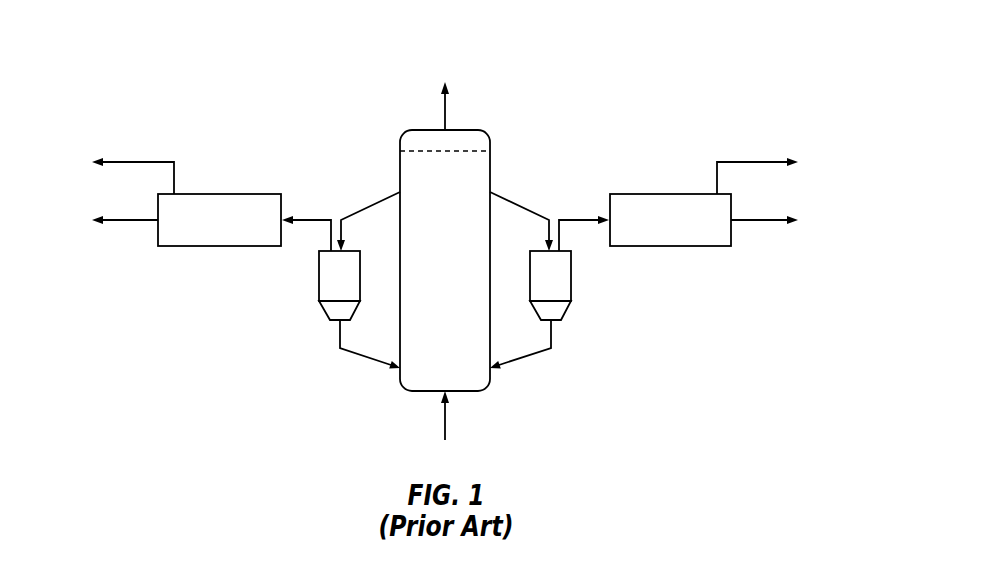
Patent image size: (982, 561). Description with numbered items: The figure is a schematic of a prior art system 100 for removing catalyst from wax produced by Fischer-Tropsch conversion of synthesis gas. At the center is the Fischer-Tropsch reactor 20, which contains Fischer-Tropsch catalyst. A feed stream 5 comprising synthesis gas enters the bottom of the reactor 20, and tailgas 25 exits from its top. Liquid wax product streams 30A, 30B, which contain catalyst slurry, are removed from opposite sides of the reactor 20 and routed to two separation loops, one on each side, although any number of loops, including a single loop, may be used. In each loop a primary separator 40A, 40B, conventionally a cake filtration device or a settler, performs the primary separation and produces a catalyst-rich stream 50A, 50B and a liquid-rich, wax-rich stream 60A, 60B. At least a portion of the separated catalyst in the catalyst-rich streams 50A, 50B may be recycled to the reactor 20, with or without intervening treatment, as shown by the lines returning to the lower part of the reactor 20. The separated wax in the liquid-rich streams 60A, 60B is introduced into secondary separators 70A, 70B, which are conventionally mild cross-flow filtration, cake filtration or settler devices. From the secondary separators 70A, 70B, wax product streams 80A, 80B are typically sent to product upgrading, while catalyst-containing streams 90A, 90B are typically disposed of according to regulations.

The prior art system 100 is at (324, 54).
The Fischer-Tropsch reactor 20 is at (461, 272).
The tailgas 25 is at (445, 106).
The feed stream 5 is at (445, 422).
The liquid wax product stream 30A is at (500, 197).
The liquid wax product stream 30B is at (390, 197).
The primary separator 40A is at (571, 275).
The primary separator 40B is at (319, 275).
The catalyst-rich stream 50A is at (522, 362).
The catalyst-rich stream 50B is at (368, 360).
The liquid-rich stream 60A is at (585, 218).
The liquid-rich stream 60B is at (303, 218).
The secondary separator 70A is at (690, 234).
The secondary separator 70B is at (240, 234).
The wax product stream 80A is at (773, 160).
The wax product stream 80B is at (118, 160).
The catalyst-containing stream 90A is at (773, 218).
The catalyst-containing stream 90B is at (119, 218).